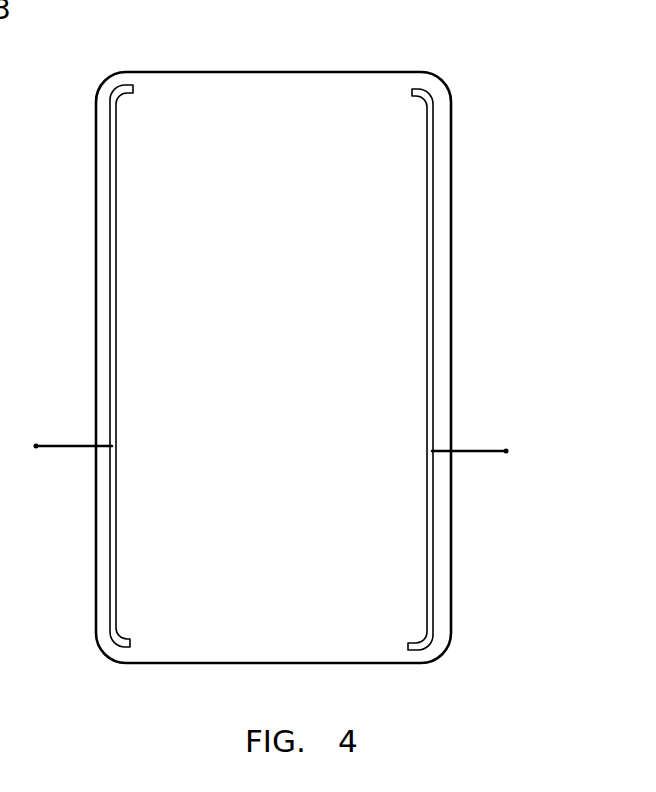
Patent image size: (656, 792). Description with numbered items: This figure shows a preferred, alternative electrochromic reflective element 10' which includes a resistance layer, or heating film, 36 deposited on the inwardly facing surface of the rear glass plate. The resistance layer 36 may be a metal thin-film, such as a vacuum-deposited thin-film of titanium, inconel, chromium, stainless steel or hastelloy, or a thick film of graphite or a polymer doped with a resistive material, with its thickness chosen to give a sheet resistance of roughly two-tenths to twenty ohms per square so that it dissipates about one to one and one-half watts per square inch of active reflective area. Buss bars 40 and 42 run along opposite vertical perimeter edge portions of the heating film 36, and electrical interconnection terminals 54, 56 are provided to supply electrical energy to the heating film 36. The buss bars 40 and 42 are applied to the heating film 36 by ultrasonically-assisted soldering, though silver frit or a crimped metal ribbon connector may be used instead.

The electrochromic reflective element 10' is at (228, 333).
The resistance layer 36 is at (227, 500).
The buss bar 40 is at (112, 200).
The buss bar 42 is at (432, 245).
The electrical interconnection terminal 54 is at (70, 445).
The electrical interconnection terminal 56 is at (463, 450).